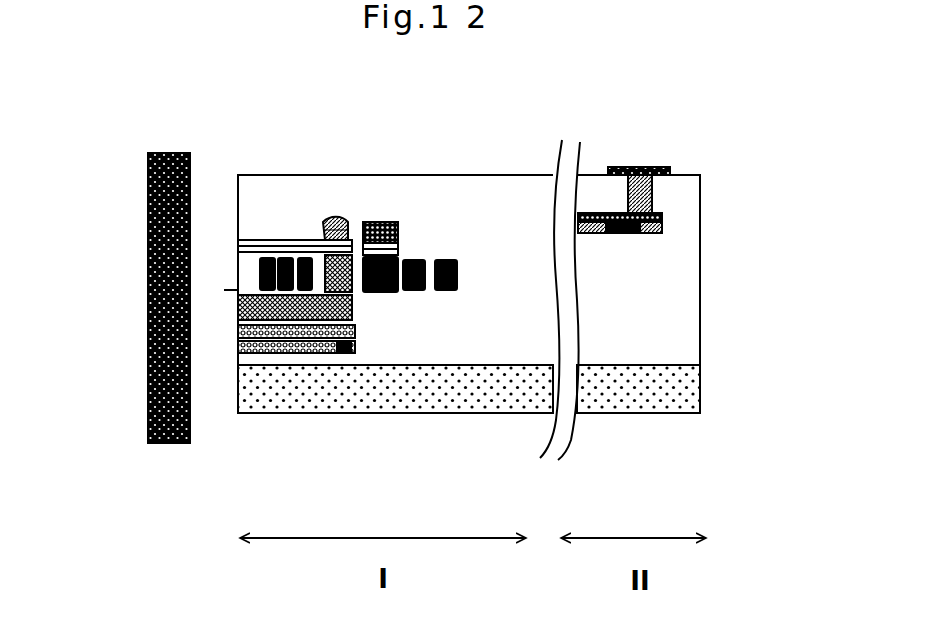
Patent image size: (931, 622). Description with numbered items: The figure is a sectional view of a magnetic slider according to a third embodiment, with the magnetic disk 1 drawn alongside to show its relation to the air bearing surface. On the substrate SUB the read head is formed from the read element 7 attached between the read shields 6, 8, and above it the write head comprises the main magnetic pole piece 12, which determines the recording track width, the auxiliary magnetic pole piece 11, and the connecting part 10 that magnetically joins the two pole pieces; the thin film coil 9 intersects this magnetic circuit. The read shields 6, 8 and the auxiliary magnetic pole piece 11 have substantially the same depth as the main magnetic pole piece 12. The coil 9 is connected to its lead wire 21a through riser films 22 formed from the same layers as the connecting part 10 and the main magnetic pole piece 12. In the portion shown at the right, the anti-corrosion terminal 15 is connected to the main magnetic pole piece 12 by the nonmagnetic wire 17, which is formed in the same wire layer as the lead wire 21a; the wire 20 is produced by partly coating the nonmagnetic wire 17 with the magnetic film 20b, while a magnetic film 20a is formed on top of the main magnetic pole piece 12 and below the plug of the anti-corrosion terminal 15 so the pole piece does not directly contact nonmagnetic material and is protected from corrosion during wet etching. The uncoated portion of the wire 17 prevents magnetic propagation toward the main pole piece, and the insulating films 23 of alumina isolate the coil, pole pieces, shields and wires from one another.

The magnetic disk 1 is at (148, 360).
The read shield 6 is at (332, 350).
The read element 7 is at (248, 352).
The upper read shield 8 is at (290, 331).
The thin film coil 9 is at (263, 257).
The connecting part 10 is at (345, 262).
The auxiliary magnetic pole piece 11 is at (345, 306).
The main magnetic pole piece 12 is at (288, 245).
The anti-corrosion terminal 15 is at (662, 165).
The nonmagnetic wire 17 is at (338, 222).
The wire 20 is at (690, 229).
The magnetic film 20a is at (332, 228).
The magnetic film 20b is at (658, 215).
The lead wire 21a is at (386, 218).
The films 22 is at (398, 247).
The insulating films 23 is at (637, 328).
The substrate SUB is at (505, 385).